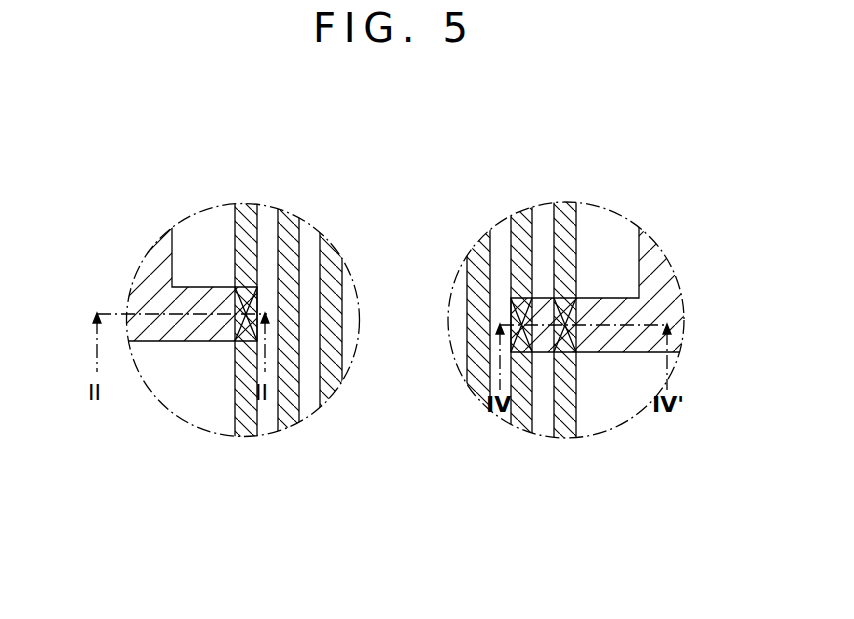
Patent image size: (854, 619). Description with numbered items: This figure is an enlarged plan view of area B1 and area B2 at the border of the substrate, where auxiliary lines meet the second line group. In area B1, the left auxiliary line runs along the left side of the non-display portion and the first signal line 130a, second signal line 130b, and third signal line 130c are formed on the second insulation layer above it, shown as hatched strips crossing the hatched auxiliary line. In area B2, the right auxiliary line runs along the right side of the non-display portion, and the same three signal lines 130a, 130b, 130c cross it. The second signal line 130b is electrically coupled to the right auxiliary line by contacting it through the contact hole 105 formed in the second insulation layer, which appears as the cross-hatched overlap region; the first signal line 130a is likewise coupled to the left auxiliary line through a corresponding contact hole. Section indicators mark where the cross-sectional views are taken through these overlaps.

The area B1 is at (171, 217).
The area B2 is at (642, 220).
The first signal line 130a is at (246, 210).
The second signal line 130b is at (290, 222).
The third signal line 130c is at (333, 250).
The contact hole 105 is at (237, 342).